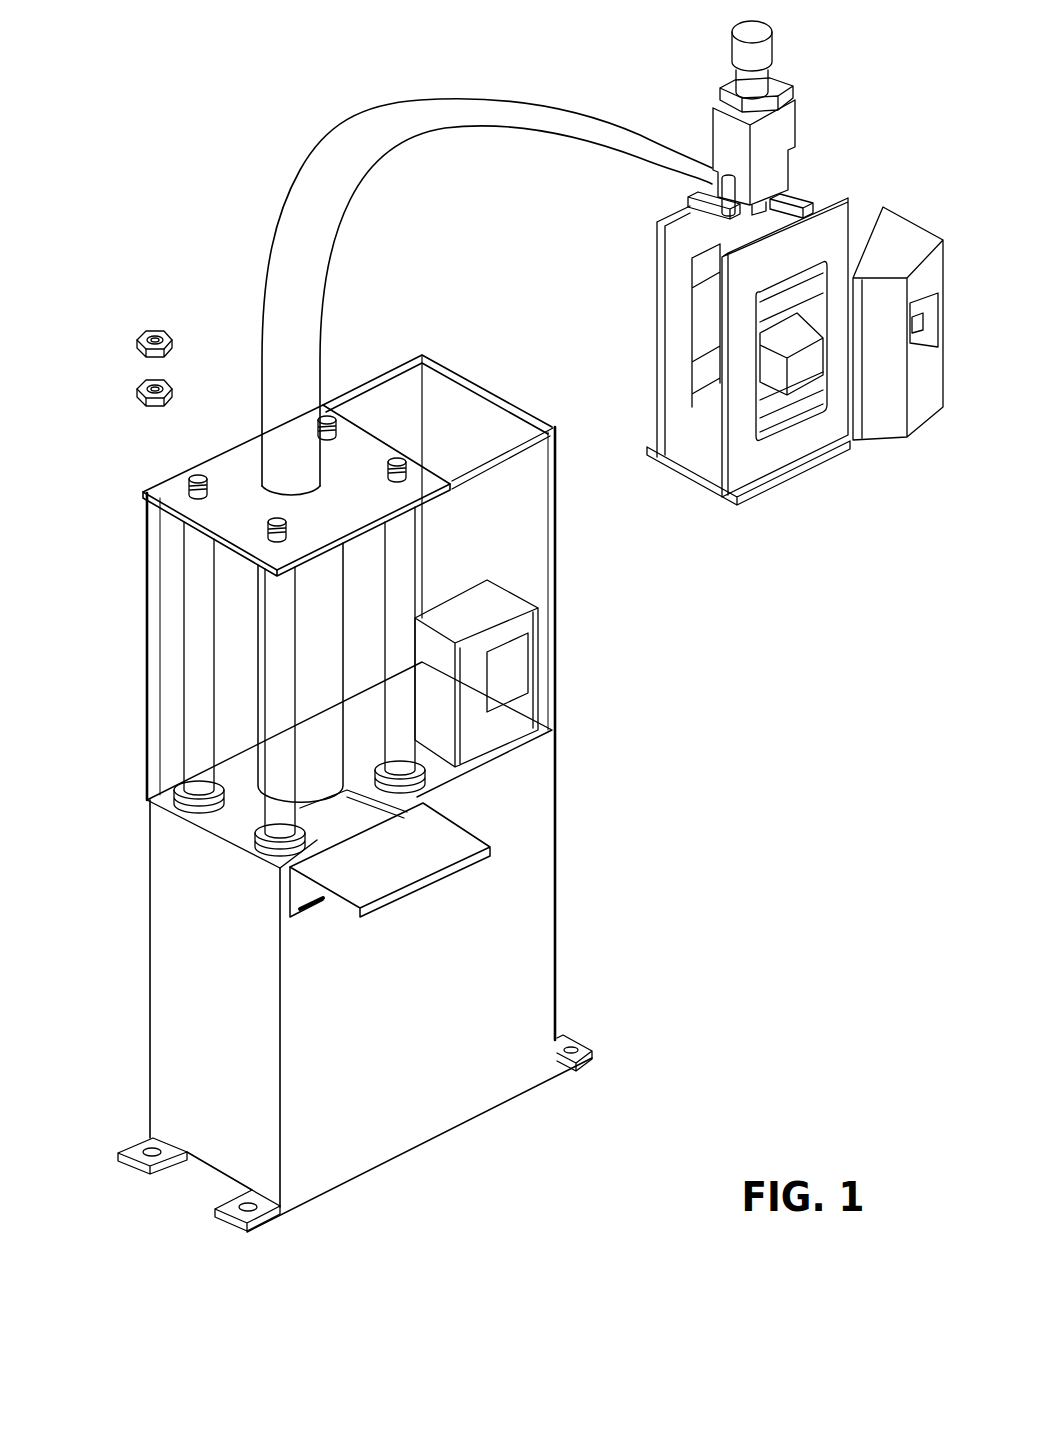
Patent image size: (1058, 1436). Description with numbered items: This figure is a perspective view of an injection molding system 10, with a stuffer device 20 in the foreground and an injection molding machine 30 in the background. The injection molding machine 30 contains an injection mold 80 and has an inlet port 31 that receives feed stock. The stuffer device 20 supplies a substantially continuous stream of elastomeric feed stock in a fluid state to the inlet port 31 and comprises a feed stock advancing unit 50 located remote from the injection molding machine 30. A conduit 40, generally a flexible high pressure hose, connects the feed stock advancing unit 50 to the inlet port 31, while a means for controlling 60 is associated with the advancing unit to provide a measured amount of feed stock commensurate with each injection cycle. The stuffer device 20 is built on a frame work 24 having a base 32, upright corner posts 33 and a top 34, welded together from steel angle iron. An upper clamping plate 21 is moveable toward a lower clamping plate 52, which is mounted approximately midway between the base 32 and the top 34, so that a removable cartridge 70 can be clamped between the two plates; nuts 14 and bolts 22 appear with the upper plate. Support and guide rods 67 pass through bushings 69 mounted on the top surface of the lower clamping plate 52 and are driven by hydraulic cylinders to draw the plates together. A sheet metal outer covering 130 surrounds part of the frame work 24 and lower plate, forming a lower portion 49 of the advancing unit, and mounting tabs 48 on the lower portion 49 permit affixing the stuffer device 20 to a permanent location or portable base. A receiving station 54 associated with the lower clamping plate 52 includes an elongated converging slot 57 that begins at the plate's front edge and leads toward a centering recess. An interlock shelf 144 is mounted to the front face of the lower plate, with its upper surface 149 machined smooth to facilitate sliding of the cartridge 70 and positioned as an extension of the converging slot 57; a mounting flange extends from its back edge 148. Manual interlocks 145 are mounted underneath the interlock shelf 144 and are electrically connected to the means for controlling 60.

The injection molding system 10 is at (196, 112).
The nuts 14 is at (137, 335).
The stuffer device 20 is at (732, 935).
The upper clamping plate 21 is at (352, 437).
The bolts 22 is at (257, 428).
The frame work 24 is at (147, 560).
The injection molding machine 30 is at (853, 118).
The inlet port 31 is at (718, 176).
The base 32 is at (435, 1140).
The upright corner posts 33 is at (553, 463).
The top 34 is at (467, 373).
The conduit 40 is at (337, 140).
The mounting tabs 48 is at (225, 1220).
The lower portion 49 is at (190, 947).
The feed stock advancing unit 50 is at (515, 802).
The lower clamping plate 52 is at (228, 823).
The receiving station 54 is at (298, 937).
The converging slot 57 is at (368, 822).
The means for controlling 60 is at (532, 625).
The support and guide rods 67 is at (278, 647).
The bushings 69 is at (153, 793).
The removable cartridge 70 is at (322, 597).
The injection mold 80 is at (783, 372).
The sheet metal outer covering 130 is at (355, 1095).
The interlock shelf 144 is at (370, 880).
The manual interlocks 145 is at (330, 908).
The back edge 148 is at (405, 812).
The upper surface 149 is at (367, 868).